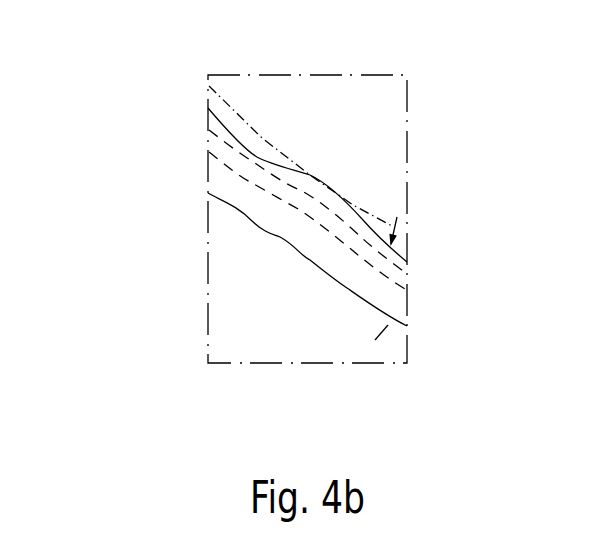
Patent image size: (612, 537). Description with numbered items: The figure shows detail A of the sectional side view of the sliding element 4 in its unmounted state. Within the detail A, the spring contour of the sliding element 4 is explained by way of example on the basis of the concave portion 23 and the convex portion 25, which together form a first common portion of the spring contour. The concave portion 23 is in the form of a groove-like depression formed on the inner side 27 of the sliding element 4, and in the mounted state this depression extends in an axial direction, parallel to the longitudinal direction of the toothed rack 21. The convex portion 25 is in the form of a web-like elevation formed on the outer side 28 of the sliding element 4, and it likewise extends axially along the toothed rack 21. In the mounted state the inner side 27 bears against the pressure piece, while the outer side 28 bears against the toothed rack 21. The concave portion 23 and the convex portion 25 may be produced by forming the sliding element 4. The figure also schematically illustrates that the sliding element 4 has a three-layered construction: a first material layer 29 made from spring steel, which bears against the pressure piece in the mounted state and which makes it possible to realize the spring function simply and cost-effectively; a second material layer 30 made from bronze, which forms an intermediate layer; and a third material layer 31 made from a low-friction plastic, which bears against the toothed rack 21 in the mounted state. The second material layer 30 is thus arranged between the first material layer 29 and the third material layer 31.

The toothed rack 21 is at (382, 122).
The convex portion 25 is at (350, 188).
The outer side 28 is at (396, 240).
The third material layer 31 is at (208, 120).
The second material layer 30 is at (208, 143).
The first material layer 29 is at (208, 182).
The sliding element 4 is at (248, 315).
The concave portion 23 is at (298, 275).
The inner side 27 is at (393, 322).
The detail A is at (208, 313).